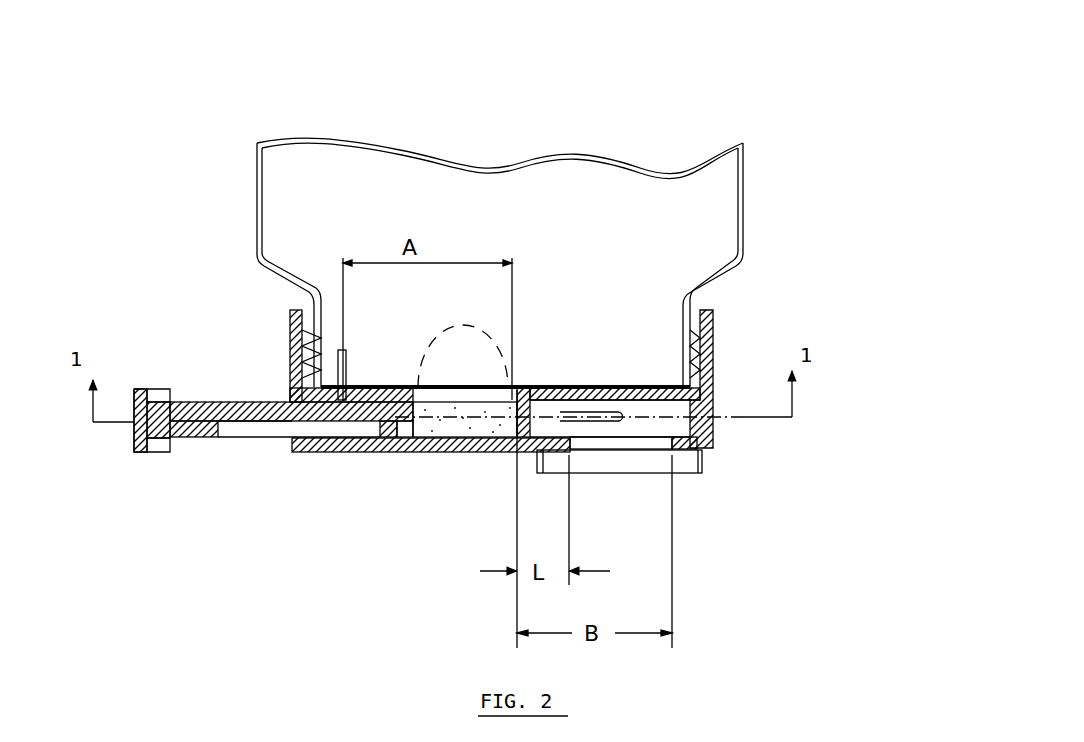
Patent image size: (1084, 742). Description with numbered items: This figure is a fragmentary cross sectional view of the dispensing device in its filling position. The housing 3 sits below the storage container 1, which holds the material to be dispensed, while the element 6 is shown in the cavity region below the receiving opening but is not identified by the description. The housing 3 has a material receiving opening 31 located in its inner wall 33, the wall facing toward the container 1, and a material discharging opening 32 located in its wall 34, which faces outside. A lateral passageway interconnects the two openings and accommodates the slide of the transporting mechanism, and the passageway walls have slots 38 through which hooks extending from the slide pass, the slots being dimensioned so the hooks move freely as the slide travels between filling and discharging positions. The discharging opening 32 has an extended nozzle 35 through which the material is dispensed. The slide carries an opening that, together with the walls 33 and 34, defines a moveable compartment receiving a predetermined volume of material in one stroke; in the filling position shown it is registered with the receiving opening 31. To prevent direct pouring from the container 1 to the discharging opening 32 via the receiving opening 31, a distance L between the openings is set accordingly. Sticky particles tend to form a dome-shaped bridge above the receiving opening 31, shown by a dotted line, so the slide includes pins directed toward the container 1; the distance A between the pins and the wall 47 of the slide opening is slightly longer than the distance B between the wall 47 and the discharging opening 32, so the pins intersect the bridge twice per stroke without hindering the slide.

The container 1 is at (742, 213).
The housing 3 is at (703, 400).
The moulding sand 6 is at (452, 427).
The material receiving opening 31 is at (465, 395).
The material discharging opening 32 is at (623, 442).
The inner wall 33 is at (610, 393).
The wall 34 is at (355, 445).
The extended nozzle 35 is at (700, 463).
The slots 38 is at (622, 417).
The wall of opening 47 is at (523, 412).